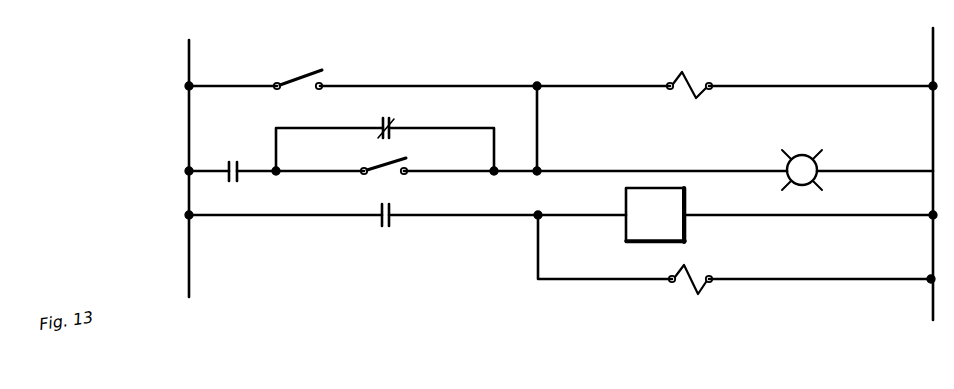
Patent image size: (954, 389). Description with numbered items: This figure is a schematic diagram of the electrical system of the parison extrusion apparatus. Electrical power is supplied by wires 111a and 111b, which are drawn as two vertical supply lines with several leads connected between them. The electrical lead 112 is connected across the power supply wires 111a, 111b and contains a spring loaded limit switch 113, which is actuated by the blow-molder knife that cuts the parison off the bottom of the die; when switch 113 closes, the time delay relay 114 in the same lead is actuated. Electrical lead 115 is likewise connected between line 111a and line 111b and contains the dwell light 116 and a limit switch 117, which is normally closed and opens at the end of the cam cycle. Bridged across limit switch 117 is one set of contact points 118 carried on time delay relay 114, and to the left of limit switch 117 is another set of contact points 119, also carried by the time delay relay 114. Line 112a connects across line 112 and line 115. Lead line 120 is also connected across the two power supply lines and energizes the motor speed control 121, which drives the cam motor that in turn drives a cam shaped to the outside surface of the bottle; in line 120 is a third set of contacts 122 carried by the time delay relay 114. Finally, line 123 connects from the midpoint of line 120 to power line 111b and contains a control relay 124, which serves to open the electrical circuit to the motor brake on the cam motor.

The power supply wire 111a is at (189, 53).
The power supply wire 111b is at (928, 47).
The electrical lead 112 is at (590, 82).
The line 112a is at (537, 120).
The spring loaded limit switch 113 is at (322, 78).
The time delay relay 114 is at (690, 78).
The electrical lead 115 is at (697, 168).
The dwell light 116 is at (804, 155).
The limit switch 117 is at (410, 167).
The set of contact points 118 is at (386, 116).
The set of contact points 119 is at (232, 159).
The lead line 120 is at (505, 215).
The motor speed control 121 is at (688, 205).
The third set of contacts 122 is at (389, 226).
The line 123 is at (808, 279).
The control relay 124 is at (697, 272).